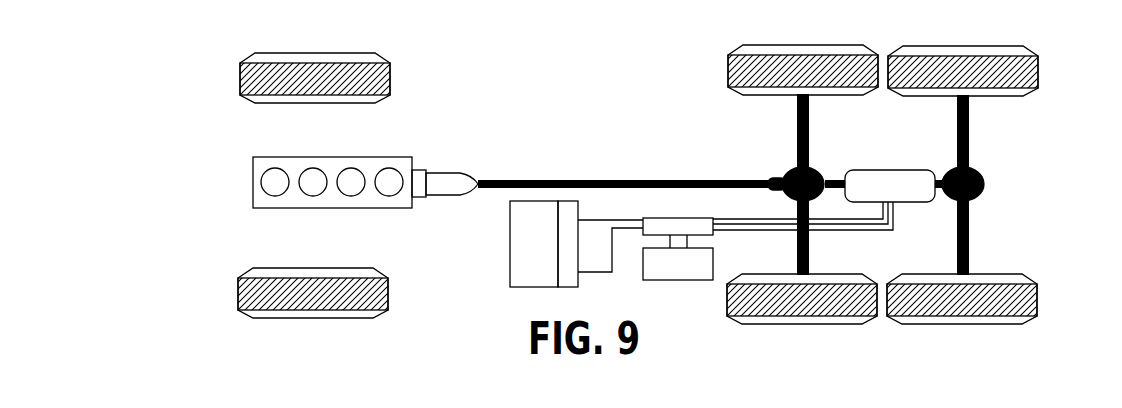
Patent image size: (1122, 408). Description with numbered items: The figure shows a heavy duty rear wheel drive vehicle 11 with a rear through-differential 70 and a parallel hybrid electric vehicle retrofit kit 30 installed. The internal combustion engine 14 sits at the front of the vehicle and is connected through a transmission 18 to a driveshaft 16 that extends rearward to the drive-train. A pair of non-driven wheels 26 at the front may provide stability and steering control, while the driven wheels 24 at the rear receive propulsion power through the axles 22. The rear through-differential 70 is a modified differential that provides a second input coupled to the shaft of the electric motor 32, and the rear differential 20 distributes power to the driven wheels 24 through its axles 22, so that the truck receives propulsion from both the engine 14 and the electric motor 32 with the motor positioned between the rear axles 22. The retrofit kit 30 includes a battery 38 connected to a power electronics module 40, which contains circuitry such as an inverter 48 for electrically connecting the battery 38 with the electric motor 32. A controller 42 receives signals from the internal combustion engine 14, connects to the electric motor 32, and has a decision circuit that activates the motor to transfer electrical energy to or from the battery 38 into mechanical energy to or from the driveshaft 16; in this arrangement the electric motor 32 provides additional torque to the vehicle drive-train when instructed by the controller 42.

The hybrid vehicle 11 is at (485, 128).
The internal combustion engine 14 is at (363, 157).
The driveshaft 16 is at (512, 176).
The transmission 18 is at (427, 169).
The rear differential 20 is at (969, 166).
The axles 22 is at (811, 126).
The driven wheels 24 is at (865, 90).
The non-driven wheels 26 is at (242, 95).
The parallel hybrid electric vehicle retrofit kit 30 is at (487, 285).
The electric motor 32 is at (857, 176).
The battery 38 is at (510, 274).
The power electronics module 40 is at (568, 202).
The controller 42 is at (667, 312).
The inverter 48 is at (648, 217).
The rear through-differential 70 is at (812, 168).